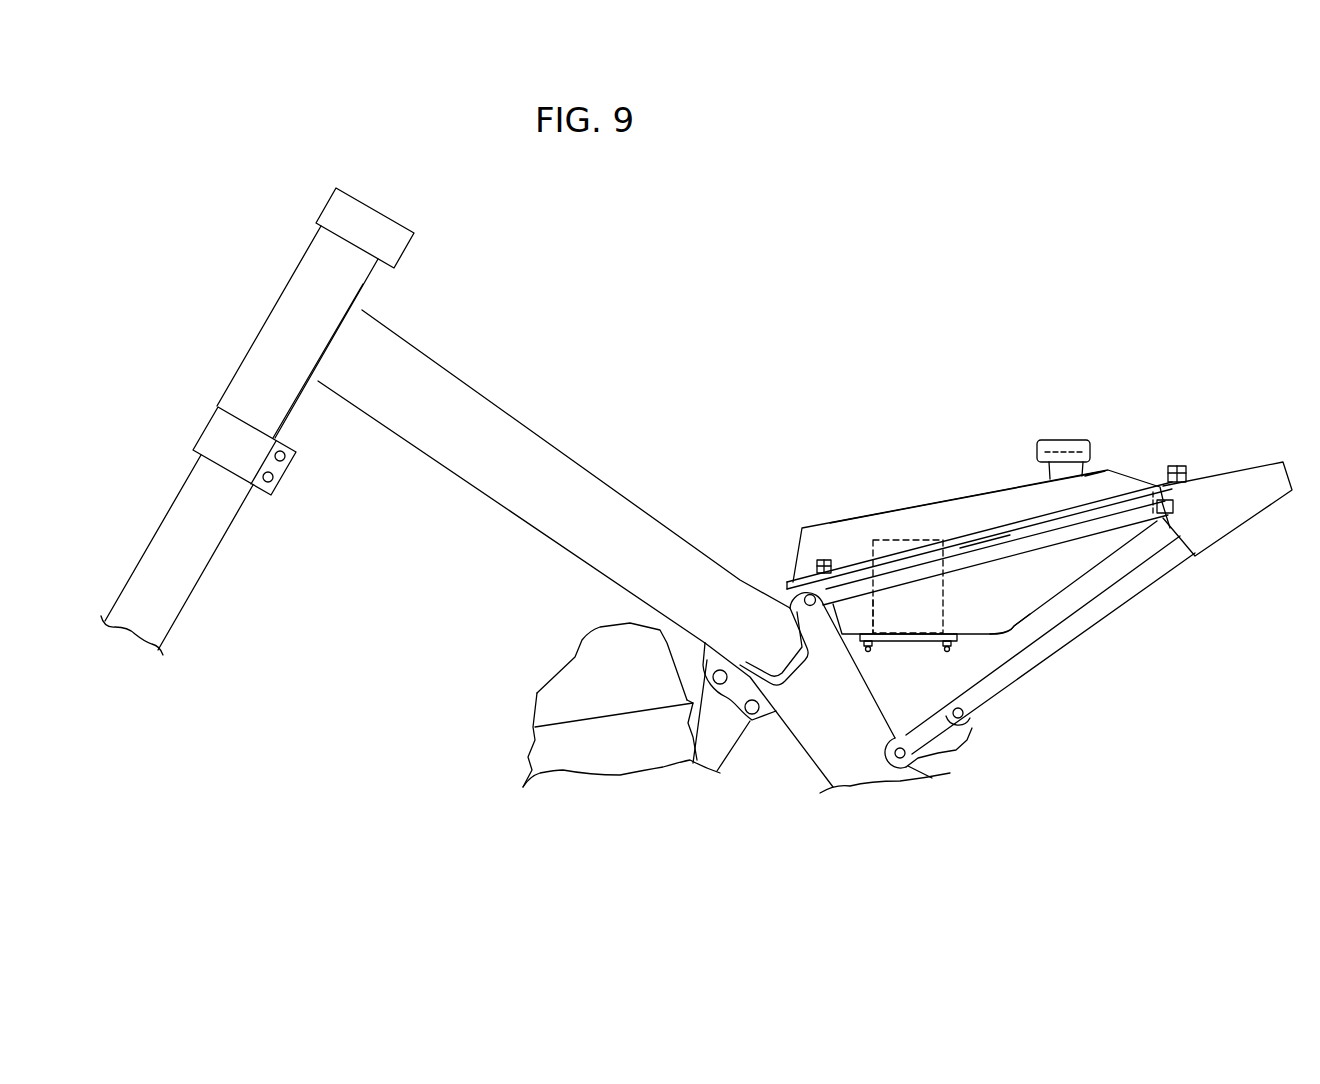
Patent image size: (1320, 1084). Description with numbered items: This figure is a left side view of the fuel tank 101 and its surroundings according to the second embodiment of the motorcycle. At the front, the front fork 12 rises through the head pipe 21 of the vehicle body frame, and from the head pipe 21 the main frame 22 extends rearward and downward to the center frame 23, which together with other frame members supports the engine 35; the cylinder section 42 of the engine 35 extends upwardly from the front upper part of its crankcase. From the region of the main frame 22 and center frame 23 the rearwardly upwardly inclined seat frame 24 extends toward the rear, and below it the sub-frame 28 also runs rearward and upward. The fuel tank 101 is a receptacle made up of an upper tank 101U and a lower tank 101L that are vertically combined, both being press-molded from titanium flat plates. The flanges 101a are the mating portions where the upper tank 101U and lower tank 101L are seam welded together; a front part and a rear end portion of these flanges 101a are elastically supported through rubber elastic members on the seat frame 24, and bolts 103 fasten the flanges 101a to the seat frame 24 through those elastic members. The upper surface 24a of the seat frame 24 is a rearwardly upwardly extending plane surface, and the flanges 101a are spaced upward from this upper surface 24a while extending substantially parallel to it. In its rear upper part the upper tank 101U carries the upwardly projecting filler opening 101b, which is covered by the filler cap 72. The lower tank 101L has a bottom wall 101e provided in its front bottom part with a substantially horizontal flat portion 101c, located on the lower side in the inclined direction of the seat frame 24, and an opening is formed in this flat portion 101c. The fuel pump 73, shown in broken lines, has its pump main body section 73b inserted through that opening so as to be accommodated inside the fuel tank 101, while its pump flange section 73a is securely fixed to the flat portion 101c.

The front fork 12 is at (257, 345).
The head pipe 21 is at (367, 287).
The main frame 22 is at (503, 430).
The center frame 23 is at (803, 712).
The seat frame 24 is at (1093, 538).
The upper surface of the seat frame 24a is at (1124, 490).
The sub-frame 28 is at (1097, 604).
The engine 35 is at (580, 775).
The cylinder section 42 is at (630, 622).
The filler cap 72 is at (1050, 438).
The fuel pump 73 is at (892, 537).
The pump flange section 73a is at (907, 641).
The pump main body section 73b is at (873, 633).
The fuel tank 101 is at (840, 518).
The upper tank 101U is at (933, 510).
The lower tank 101L is at (1033, 592).
The flange 101a is at (992, 527).
The filler opening 101b is at (1096, 470).
The flat portion 101c is at (967, 697).
The bottom wall 101e is at (1007, 635).
The bolt 103 is at (818, 560).